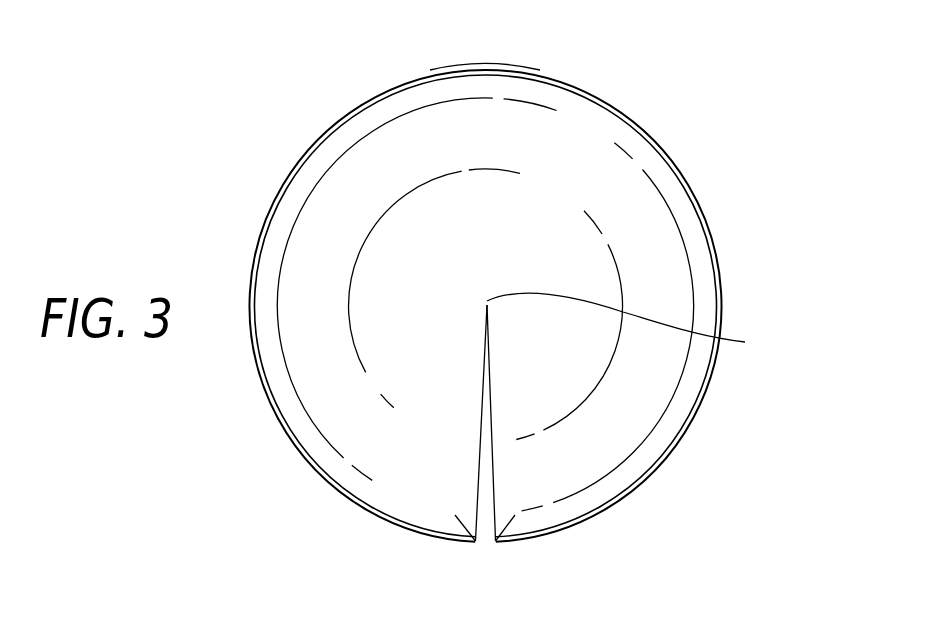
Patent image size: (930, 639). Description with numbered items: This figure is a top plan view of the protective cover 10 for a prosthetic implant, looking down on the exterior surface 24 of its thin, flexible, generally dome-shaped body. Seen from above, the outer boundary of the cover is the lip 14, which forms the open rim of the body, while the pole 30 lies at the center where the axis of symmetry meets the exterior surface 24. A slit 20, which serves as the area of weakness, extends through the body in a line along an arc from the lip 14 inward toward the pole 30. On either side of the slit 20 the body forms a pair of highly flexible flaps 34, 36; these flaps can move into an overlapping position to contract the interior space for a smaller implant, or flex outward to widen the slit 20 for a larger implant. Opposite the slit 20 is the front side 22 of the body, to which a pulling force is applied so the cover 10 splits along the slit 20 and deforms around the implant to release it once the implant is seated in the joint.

The protective cover 10 is at (694, 102).
The lip 14 is at (719, 265).
The slit 20 is at (479, 518).
The front side 22 is at (484, 70).
The exterior surface 24 is at (487, 243).
The pole 30 is at (630, 326).
The flap 34 is at (463, 518).
The flap 36 is at (513, 518).